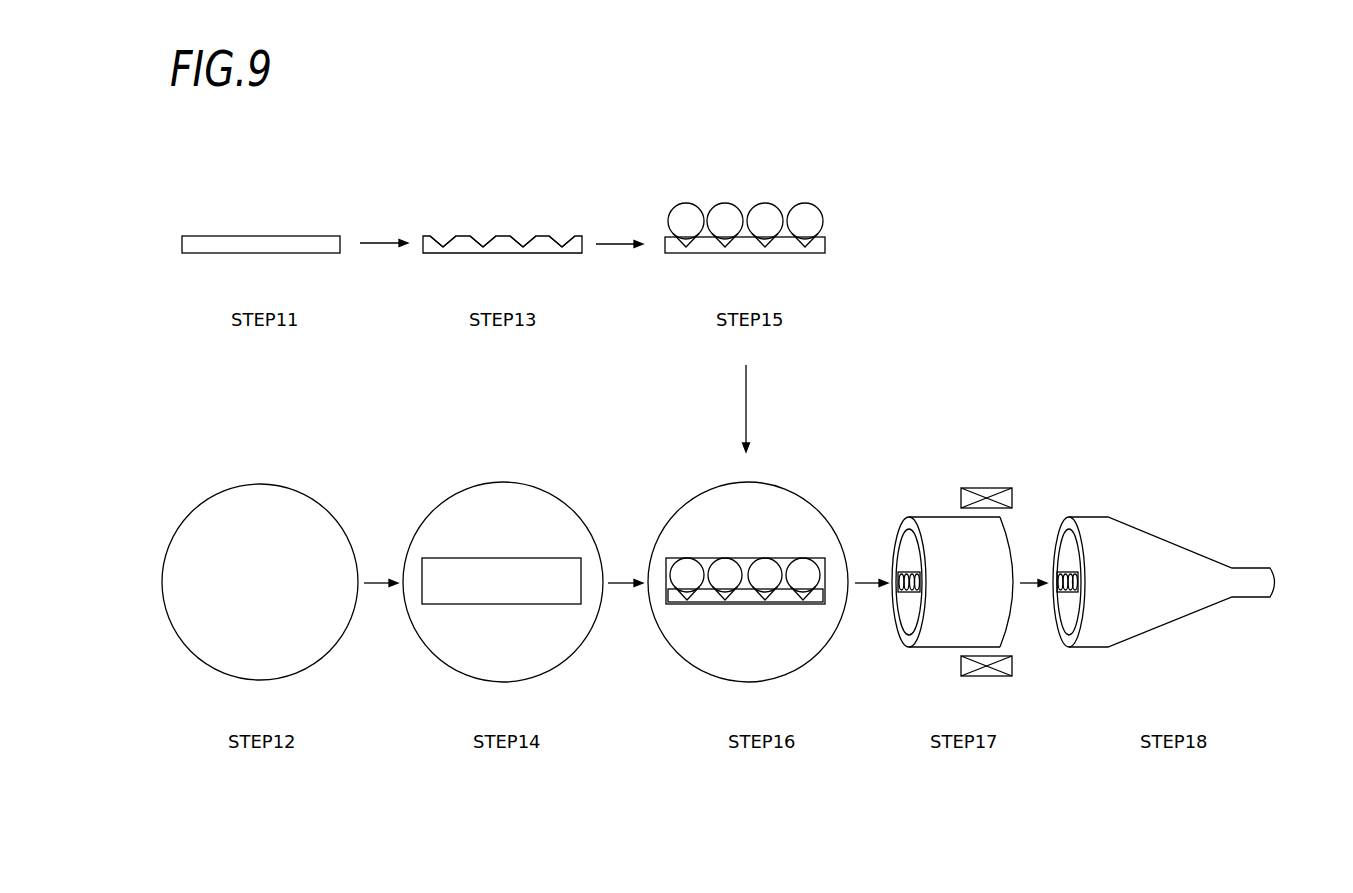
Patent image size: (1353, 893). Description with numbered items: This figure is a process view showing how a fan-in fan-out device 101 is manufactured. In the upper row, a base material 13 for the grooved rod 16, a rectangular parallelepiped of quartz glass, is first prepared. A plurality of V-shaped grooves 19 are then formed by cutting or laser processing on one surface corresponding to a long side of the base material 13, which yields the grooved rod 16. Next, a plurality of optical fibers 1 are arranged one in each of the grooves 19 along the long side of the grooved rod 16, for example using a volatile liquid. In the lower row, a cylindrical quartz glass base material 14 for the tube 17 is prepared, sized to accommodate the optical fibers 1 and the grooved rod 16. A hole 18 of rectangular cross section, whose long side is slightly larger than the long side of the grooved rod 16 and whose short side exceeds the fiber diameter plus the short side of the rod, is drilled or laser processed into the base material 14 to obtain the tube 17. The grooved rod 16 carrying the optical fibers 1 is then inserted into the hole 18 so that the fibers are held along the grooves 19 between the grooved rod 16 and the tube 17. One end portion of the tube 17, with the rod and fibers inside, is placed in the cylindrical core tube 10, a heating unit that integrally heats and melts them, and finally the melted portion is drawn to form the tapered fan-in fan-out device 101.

The optical fibers 1 is at (781, 197).
The base material of the grooved rod 13 is at (255, 236).
The V-shaped grooves 19 is at (483, 236).
The grooved rod 16 is at (563, 218).
The base material of the tube 14 is at (234, 486).
The tube 17 is at (579, 491).
The hole 18 is at (540, 593).
The cylindrical core tube 10 is at (1001, 479).
The fan-in fan-out device 101 is at (1156, 527).